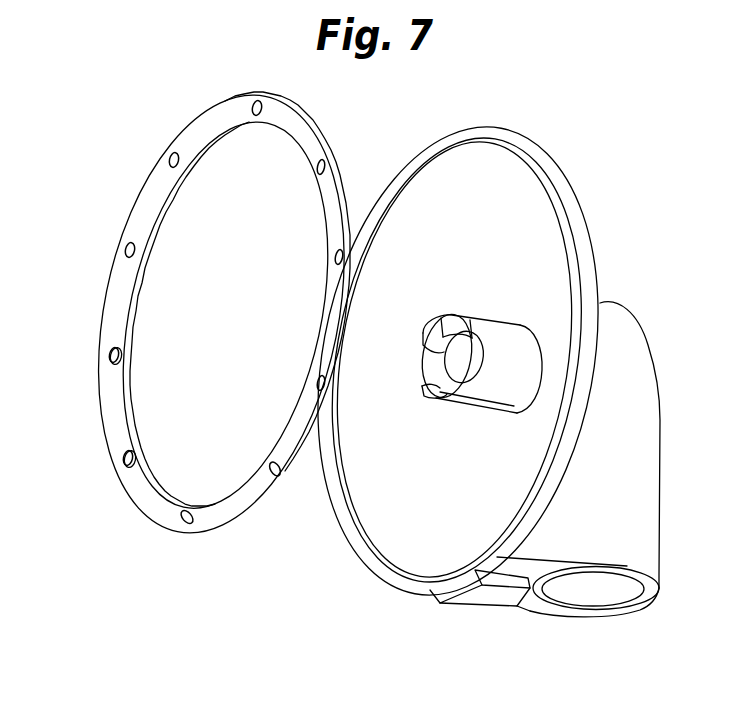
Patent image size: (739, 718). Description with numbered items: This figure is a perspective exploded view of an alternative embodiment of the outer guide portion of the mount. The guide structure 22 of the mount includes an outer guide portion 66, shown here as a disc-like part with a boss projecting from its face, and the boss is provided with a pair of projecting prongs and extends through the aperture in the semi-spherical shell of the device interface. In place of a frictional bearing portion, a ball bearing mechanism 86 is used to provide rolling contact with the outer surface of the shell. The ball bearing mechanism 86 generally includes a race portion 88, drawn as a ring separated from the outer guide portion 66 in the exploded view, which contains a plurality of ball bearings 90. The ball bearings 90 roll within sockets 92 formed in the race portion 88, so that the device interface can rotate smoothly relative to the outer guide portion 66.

The guide structure 22 is at (583, 210).
The outer guide portion 66 is at (556, 163).
The ball bearing mechanism 86 is at (303, 113).
The race portion 88 is at (153, 172).
The ball bearings 90 is at (268, 98).
The sockets 92 is at (117, 362).